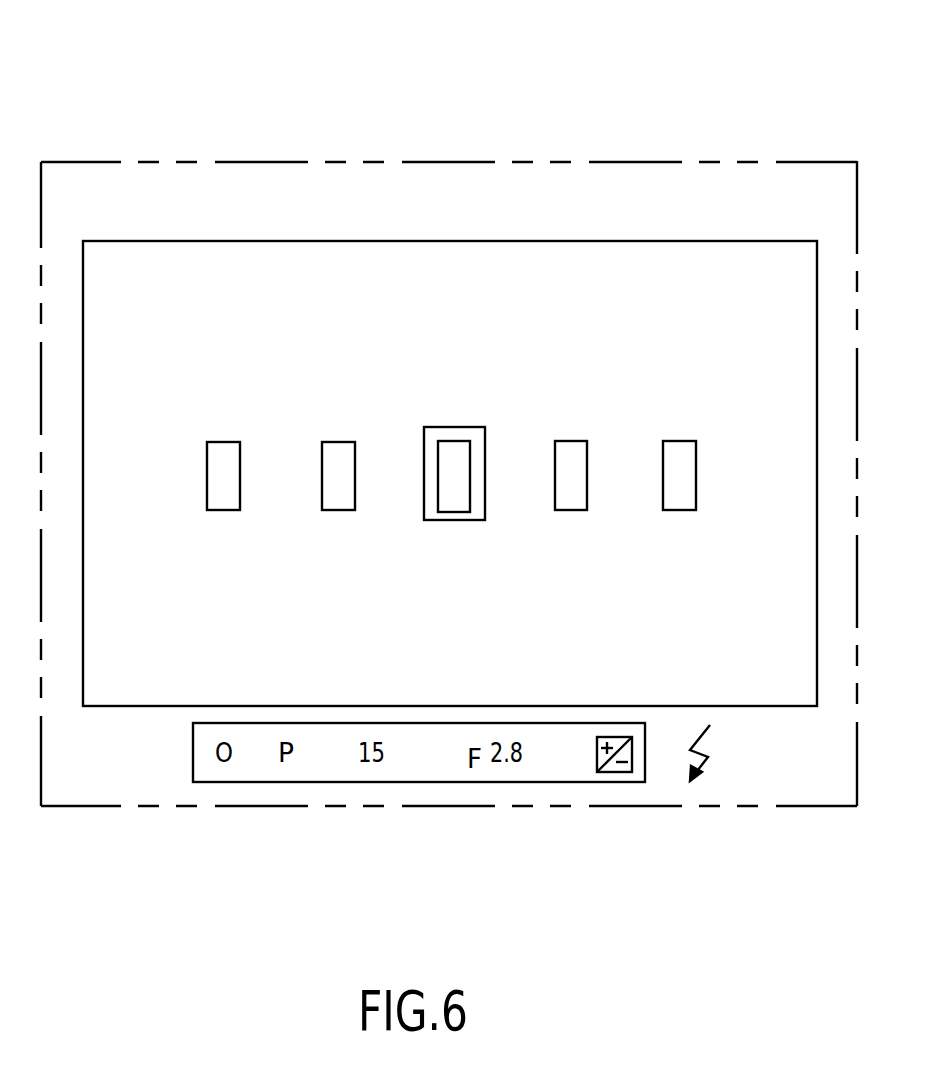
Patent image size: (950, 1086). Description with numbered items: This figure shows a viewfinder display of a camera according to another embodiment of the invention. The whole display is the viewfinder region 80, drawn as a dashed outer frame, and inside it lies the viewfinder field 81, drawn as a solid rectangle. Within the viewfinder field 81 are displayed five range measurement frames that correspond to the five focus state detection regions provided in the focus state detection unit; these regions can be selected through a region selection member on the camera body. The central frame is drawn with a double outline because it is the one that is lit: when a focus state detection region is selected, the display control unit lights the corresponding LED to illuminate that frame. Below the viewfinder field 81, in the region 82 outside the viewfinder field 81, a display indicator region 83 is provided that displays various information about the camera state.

The viewfinder region 80 is at (92, 162).
The viewfinder field 81 is at (602, 253).
The region outside the viewfinder field 82 is at (85, 806).
The display indicator region 83 is at (613, 782).